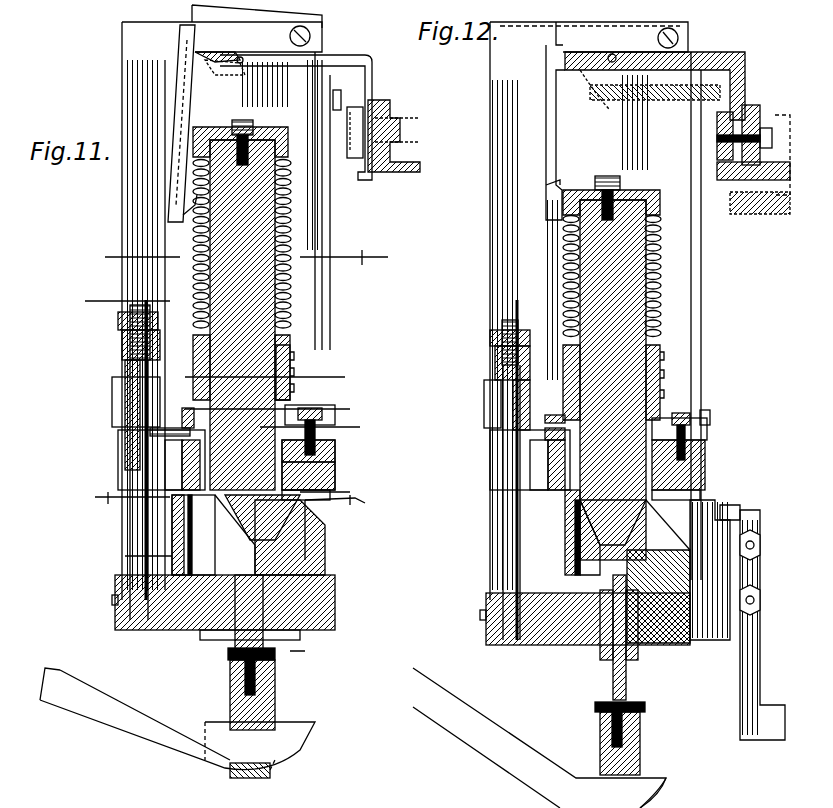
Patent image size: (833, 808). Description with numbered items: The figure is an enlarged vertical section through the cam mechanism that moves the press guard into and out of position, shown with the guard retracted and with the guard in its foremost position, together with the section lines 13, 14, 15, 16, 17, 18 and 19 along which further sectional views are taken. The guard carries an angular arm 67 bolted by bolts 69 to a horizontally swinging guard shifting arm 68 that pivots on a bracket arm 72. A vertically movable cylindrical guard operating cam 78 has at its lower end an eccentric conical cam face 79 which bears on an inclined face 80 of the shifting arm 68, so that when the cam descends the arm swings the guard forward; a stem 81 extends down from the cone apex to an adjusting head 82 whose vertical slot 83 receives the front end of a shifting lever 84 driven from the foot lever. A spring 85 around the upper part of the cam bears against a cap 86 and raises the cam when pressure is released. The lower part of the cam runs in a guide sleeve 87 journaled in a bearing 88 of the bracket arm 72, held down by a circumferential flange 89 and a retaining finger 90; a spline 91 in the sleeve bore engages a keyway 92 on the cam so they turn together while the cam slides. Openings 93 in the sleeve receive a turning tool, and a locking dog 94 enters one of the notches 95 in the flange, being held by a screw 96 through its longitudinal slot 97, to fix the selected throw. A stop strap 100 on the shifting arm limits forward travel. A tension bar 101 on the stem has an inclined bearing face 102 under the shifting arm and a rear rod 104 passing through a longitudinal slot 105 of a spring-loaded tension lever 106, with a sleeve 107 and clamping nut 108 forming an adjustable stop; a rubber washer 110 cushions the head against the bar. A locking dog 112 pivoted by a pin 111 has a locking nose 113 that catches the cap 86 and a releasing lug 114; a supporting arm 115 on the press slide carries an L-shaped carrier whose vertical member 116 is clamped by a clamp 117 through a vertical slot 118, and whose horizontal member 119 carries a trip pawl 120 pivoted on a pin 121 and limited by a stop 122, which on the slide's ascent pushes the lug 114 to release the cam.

In FIG. 11, the section line 13 is at (246, 257).
In FIG. 11, the section line 14 is at (268, 375).
In FIG. 11, the section line 15 is at (274, 406).
In FIG. 11, the section line 16 is at (313, 427).
In FIG. 11, the section line 17 is at (227, 507).
In FIG. 11, the section line 18 is at (223, 397).
In FIG. 11, the section line 19 is at (311, 584).
In FIG. 12, the angular arm 67 is at (752, 652).
In FIG. 11, the guard shifting arm 68 is at (325, 528).
In FIG. 12, the guard shifting arm 68 is at (710, 525).
In FIG. 12, the bolts 69 is at (760, 598).
In FIG. 11, the bracket arm 72 is at (335, 479).
In FIG. 12, the bracket arm 72 is at (690, 460).
In FIG. 11, the guard operating cam 78 is at (262, 232).
In FIG. 12, the guard operating cam 78 is at (630, 300).
In FIG. 11, the cam face 79 is at (213, 535).
In FIG. 12, the cam face 79 is at (580, 570).
In FIG. 11, the inclined face 80 is at (330, 495).
In FIG. 12, the inclined face 80 is at (692, 495).
In FIG. 11, the stem 81 is at (235, 640).
In FIG. 12, the stem 81 is at (613, 678).
In FIG. 11, the adjusting head 82 is at (230, 684).
In FIG. 12, the adjusting head 82 is at (600, 732).
In FIG. 11, the vertical slot 83 is at (270, 765).
In FIG. 12, the vertical slot 83 is at (660, 806).
In FIG. 11, the shifting lever 84 is at (128, 705).
In FIG. 12, the shifting lever 84 is at (508, 745).
In FIG. 11, the spring 85 is at (195, 243).
In FIG. 12, the spring 85 is at (612, 276).
In FIG. 11, the cap 86 is at (193, 135).
In FIG. 12, the cap 86 is at (655, 199).
In FIG. 11, the guide sleeve 87 is at (335, 462).
In FIG. 12, the guide sleeve 87 is at (565, 505).
In FIG. 11, the bearing 88 is at (182, 458).
In FIG. 12, the bearing 88 is at (548, 460).
In FIG. 11, the circumferential flange 89 is at (150, 428).
In FIG. 12, the circumferential flange 89 is at (670, 418).
In FIG. 11, the retaining finger 90 is at (182, 415).
In FIG. 12, the retaining finger 90 is at (545, 433).
In FIG. 11, the spline 91 is at (193, 335).
In FIG. 12, the keyway 92 is at (545, 418).
In FIG. 11, the openings 93 is at (290, 385).
In FIG. 12, the openings 93 is at (665, 400).
In FIG. 11, the locking dog 94 is at (310, 407).
In FIG. 12, the locking dog 94 is at (690, 418).
In FIG. 11, the notches 95 is at (335, 447).
In FIG. 12, the notches 95 is at (548, 445).
In FIG. 12, the screw 96 is at (730, 399).
In FIG. 11, the longitudinal slot 97 is at (320, 410).
In FIG. 11, the stop strap 100 is at (120, 557).
In FIG. 12, the stop strap 100 is at (575, 550).
In FIG. 11, the tension bar 101 is at (175, 610).
In FIG. 12, the tension bar 101 is at (550, 630).
In FIG. 11, the inclined bearing face 102 is at (325, 572).
In FIG. 12, the inclined bearing face 102 is at (640, 590).
In FIG. 11, the rod 104 is at (130, 530).
In FIG. 12, the rod 104 is at (503, 530).
In FIG. 11, the longitudinal slot 105 is at (118, 414).
In FIG. 12, the longitudinal slot 105 is at (486, 380).
In FIG. 11, the tension lever 106 is at (125, 373).
In FIG. 12, the tension lever 106 is at (490, 396).
In FIG. 11, the sleeve 107 is at (125, 351).
In FIG. 12, the sleeve 107 is at (495, 352).
In FIG. 11, the clamping nut 108 is at (118, 320).
In FIG. 12, the clamping nut 108 is at (490, 332).
In FIG. 11, the washer 110 is at (275, 660).
In FIG. 12, the washer 110 is at (645, 708).
In FIG. 11, the pin 111 is at (312, 36).
In FIG. 12, the pin 111 is at (680, 36).
In FIG. 11, the locking dog 112 is at (180, 98).
In FIG. 12, the locking dog 112 is at (556, 150).
In FIG. 11, the locking nose 113 is at (178, 200).
In FIG. 12, the locking nose 113 is at (560, 186).
In FIG. 11, the releasing lug 114 is at (205, 58).
In FIG. 12, the releasing lug 114 is at (570, 71).
In FIG. 11, the supporting arm 115 is at (418, 160).
In FIG. 12, the supporting arm 115 is at (783, 149).
In FIG. 11, the vertical member 116 is at (385, 100).
In FIG. 12, the vertical member 116 is at (752, 105).
In FIG. 11, the clamp 117 is at (352, 160).
In FIG. 12, the clamp 117 is at (717, 150).
In FIG. 12, the vertical slot 118 is at (728, 112).
In FIG. 11, the horizontal member 119 is at (372, 60).
In FIG. 12, the horizontal member 119 is at (740, 52).
In FIG. 11, the trip pawl 120 is at (195, 22).
In FIG. 12, the trip pawl 120 is at (610, 55).
In FIG. 11, the pin 121 is at (280, 36).
In FIG. 12, the pin 121 is at (652, 38).
In FIG. 11, the stop 122 is at (232, 72).
In FIG. 12, the stop 122 is at (600, 95).